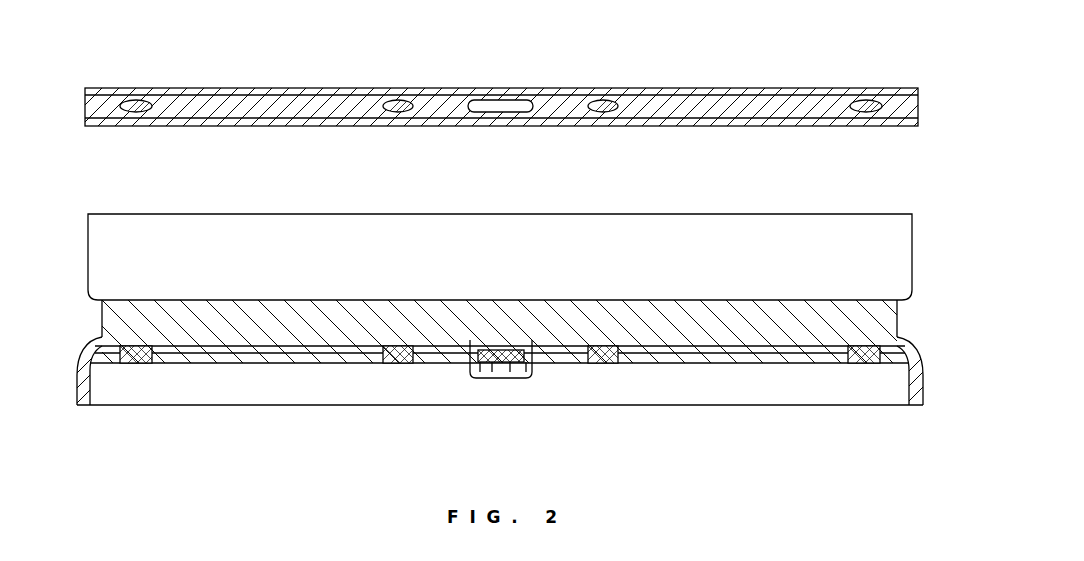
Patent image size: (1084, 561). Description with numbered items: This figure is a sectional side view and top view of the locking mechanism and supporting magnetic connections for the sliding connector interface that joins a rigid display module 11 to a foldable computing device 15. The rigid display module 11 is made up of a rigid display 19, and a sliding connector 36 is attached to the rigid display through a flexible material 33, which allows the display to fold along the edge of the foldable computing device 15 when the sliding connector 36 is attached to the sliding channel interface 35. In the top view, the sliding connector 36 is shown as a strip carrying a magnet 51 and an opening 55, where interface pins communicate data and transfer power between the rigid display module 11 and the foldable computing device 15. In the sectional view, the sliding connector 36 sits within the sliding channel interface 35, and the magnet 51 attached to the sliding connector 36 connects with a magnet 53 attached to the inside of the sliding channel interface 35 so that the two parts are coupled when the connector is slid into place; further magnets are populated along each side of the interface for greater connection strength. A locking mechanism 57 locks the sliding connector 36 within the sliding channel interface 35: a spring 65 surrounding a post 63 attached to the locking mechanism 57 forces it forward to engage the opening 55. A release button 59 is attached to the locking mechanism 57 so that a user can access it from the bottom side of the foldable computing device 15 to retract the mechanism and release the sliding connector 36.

The rigid display module 11 is at (85, 100).
The foldable computing device 15 is at (918, 93).
The rigid display 19 is at (912, 222).
The flexible material 33 is at (897, 322).
The sliding channel interface 35 is at (205, 88).
The sliding connector 36 is at (205, 126).
The magnet 51 is at (398, 100).
The magnet 53 is at (398, 363).
The opening 55 is at (500, 100).
The locking mechanism 57 is at (508, 348).
The release button 59 is at (532, 370).
The post 63 is at (524, 378).
The spring 65 is at (497, 378).